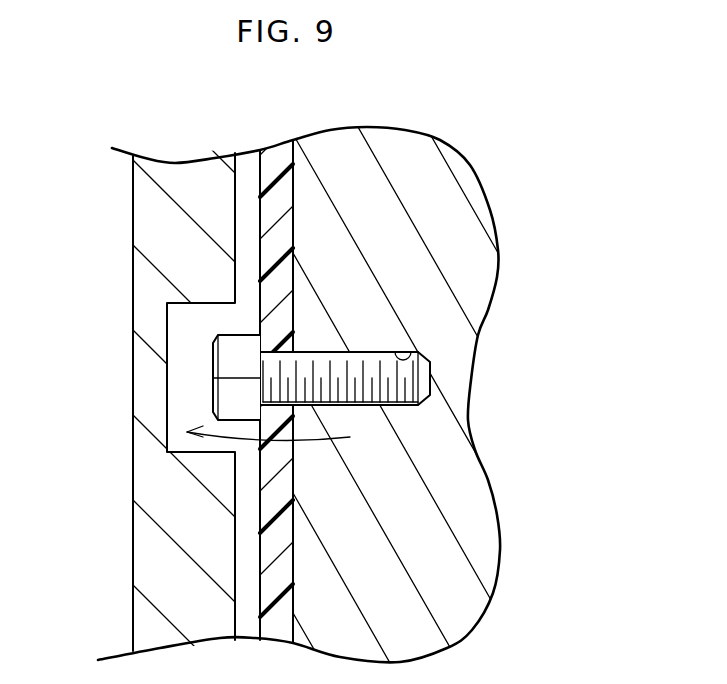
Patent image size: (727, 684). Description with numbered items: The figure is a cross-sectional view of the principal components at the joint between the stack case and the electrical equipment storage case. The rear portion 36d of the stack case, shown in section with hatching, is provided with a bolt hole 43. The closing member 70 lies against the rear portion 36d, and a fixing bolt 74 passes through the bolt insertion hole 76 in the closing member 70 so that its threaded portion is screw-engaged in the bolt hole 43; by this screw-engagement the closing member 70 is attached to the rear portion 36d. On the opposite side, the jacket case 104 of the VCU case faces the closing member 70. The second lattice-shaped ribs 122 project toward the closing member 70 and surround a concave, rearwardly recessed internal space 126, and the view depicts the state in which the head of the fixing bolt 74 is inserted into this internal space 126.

The rear portion 36d is at (430, 172).
The jacket case 104 is at (162, 493).
The internal space 126 is at (170, 322).
The closing member 70 is at (272, 163).
The fixing bolt 74 is at (420, 385).
The bolt hole 43 is at (413, 350).
The bolt insertion hole 76 is at (258, 372).
The second lattice-shaped rib 122 is at (287, 438).